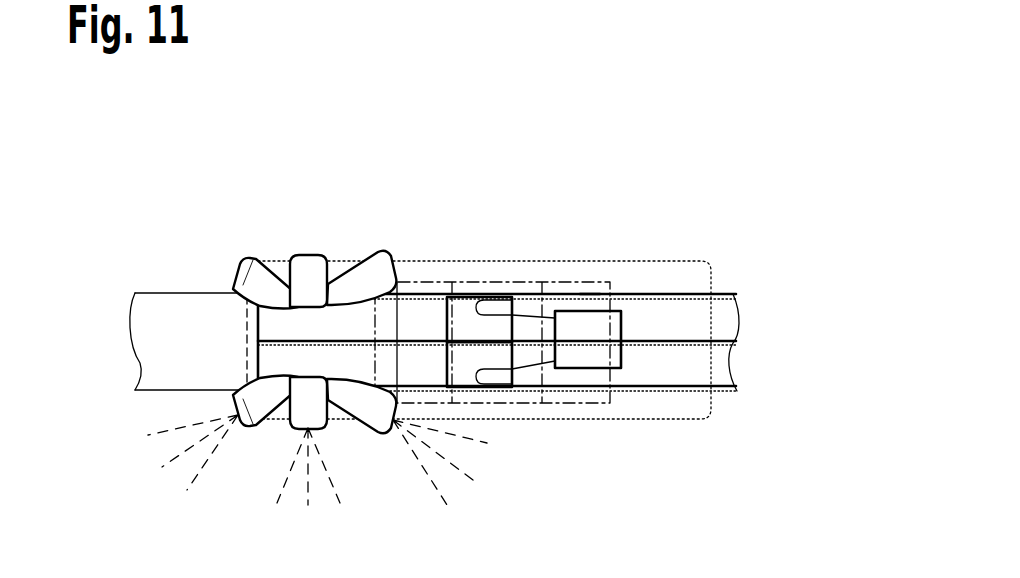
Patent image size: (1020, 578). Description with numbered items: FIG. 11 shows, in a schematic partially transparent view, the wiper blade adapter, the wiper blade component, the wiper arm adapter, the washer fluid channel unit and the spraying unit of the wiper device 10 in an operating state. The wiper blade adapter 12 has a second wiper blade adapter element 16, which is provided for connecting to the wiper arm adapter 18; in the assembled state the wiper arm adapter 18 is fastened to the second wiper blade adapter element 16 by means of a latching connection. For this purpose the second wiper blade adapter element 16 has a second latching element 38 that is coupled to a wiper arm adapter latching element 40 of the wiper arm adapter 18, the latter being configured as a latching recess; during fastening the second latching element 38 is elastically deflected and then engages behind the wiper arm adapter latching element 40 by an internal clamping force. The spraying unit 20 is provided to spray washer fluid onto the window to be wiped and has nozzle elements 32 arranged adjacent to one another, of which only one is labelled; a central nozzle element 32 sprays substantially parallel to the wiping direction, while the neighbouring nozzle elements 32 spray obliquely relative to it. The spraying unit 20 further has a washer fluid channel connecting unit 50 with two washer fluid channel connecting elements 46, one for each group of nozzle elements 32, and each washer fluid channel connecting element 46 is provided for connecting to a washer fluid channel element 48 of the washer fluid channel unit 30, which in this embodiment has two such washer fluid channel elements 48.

The wiper device 10 is at (727, 215).
The wiper blade adapter 12 is at (317, 322).
The second wiper blade adapter element 16 is at (280, 263).
The wiper arm adapter 18 is at (650, 277).
The spraying unit 20 is at (235, 260).
The washer fluid channel unit 30 is at (752, 390).
The nozzle element 32 is at (240, 281).
The second latching element 38 is at (568, 330).
The wiper arm adapter latching element 40 is at (587, 299).
The washer fluid channel connecting element 46 is at (475, 380).
The washer fluid channel element 48 is at (725, 372).
The washer fluid channel connecting unit 50 is at (505, 392).